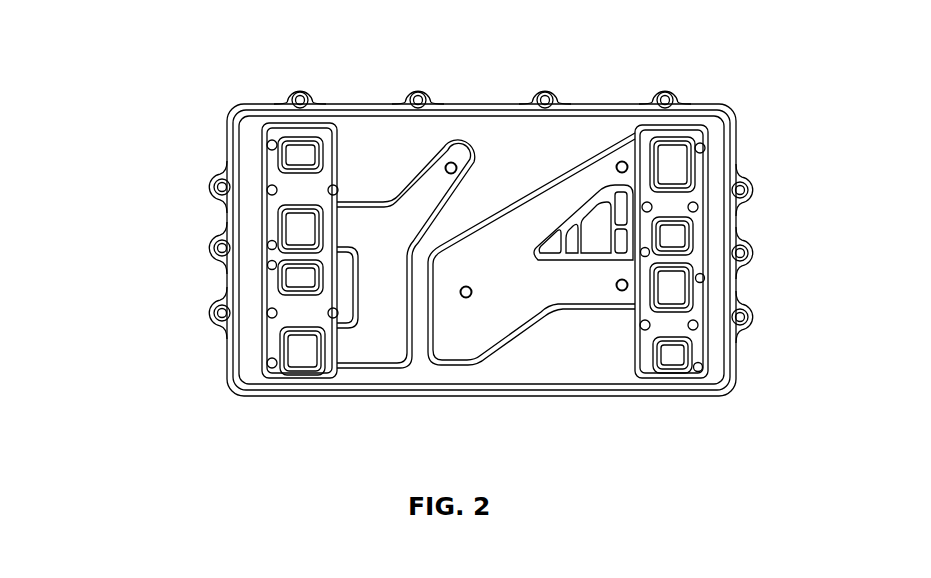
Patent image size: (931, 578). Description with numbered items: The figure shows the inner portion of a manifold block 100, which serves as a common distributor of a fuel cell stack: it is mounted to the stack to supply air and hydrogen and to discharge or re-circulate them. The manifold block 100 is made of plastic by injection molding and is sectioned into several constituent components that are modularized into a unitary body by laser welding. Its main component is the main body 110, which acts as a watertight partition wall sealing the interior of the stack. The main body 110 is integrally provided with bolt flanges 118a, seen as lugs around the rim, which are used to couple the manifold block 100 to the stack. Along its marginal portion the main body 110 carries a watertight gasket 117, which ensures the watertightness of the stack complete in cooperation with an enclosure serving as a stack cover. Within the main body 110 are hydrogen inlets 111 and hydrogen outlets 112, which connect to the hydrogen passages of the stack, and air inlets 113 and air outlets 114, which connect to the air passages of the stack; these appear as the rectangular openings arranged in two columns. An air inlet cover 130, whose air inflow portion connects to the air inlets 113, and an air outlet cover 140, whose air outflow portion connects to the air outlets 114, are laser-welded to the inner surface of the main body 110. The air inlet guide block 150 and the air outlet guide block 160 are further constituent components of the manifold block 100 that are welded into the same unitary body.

The manifold block 100 is at (200, 148).
The main body 110 is at (503, 151).
The hydrogen inlets 111 is at (307, 147).
The hydrogen outlets 112 is at (675, 237).
The air inlets 113 is at (674, 157).
The air outlets 114 is at (293, 225).
The watertight gasket 117 is at (233, 347).
The bolt flanges 118a is at (545, 92).
The air inlet cover 130 is at (589, 170).
The air outlet cover 140 is at (378, 221).
The air inlet guide block 150 is at (707, 162).
The air outlet guide block 160 is at (268, 146).